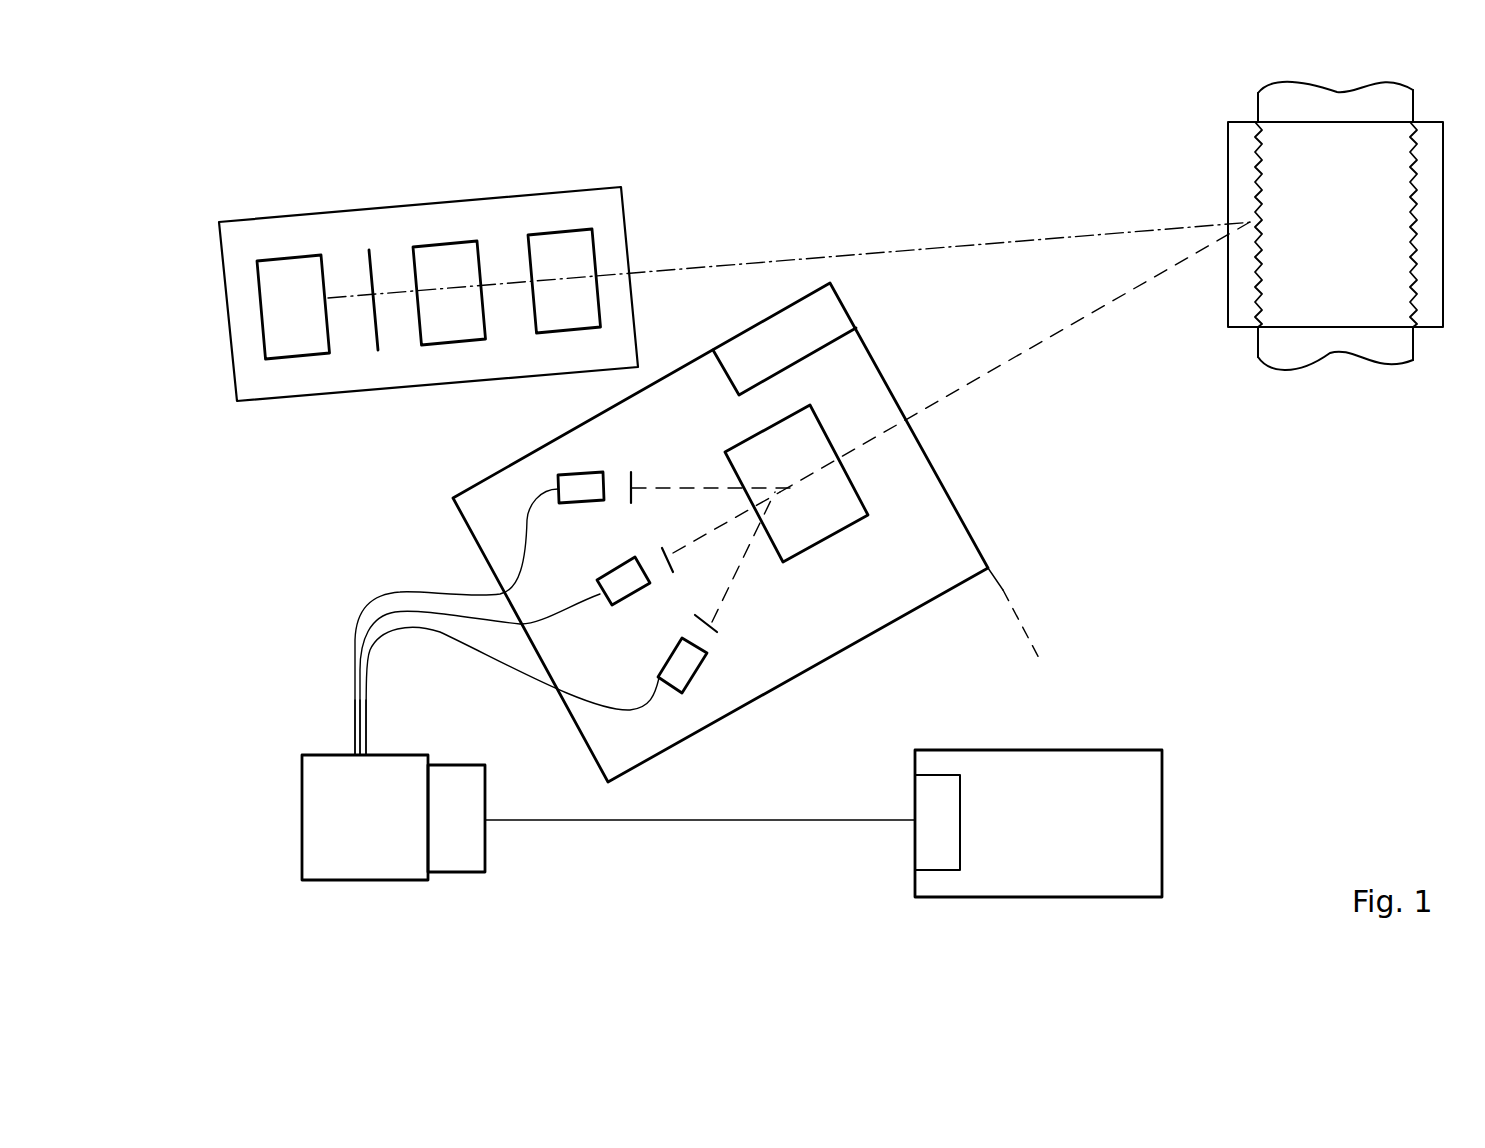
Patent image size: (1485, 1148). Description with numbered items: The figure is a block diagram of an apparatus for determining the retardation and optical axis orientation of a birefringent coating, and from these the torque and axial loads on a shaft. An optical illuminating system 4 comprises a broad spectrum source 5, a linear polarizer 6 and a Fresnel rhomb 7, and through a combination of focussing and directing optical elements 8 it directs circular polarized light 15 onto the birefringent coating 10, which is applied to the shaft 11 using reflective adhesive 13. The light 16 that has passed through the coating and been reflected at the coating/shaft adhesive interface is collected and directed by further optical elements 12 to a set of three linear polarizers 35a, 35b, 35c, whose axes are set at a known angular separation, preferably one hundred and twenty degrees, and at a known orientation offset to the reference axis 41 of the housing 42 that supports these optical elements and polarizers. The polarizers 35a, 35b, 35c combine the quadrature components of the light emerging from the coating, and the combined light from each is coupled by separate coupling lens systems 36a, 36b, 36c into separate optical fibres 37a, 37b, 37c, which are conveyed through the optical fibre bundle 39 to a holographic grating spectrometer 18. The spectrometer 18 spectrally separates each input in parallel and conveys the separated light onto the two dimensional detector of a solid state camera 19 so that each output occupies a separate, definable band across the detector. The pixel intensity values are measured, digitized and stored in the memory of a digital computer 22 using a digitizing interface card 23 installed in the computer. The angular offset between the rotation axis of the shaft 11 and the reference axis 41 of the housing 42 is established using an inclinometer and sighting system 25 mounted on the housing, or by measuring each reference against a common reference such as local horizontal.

The optical illuminating system 4 is at (280, 400).
The broad spectrum source 5 is at (305, 260).
The linear polarizer 6 is at (367, 265).
The Fresnel rhomb 7 is at (465, 253).
The focussing and directing optical elements 8 is at (572, 245).
The birefringent coating 10 is at (1228, 147).
The shaft 11 is at (1258, 95).
The further optical elements 12 is at (845, 505).
The reflective adhesive 13 is at (1258, 217).
The circular polarized light 15 is at (1058, 240).
The light 16 is at (1093, 318).
The holographic grating spectrometer 18 is at (322, 770).
The solid state camera 19 is at (472, 830).
The digital computer 22 is at (1097, 765).
The digitizing interface card 23 is at (927, 788).
The inclinometer and sighting system 25 is at (821, 316).
The linear polarizer 35a is at (630, 472).
The linear polarizer 35b is at (662, 548).
The linear polarizer 35c is at (720, 625).
The coupling lens system 36a is at (550, 477).
The coupling lens system 36b is at (627, 590).
The coupling lens system 36c is at (695, 670).
The optical fibre 37a is at (525, 537).
The optical fibre 37b is at (557, 607).
The optical fibre 37c is at (647, 707).
The optical fibre bundle 39 is at (353, 693).
The reference axis 41 is at (1017, 573).
The housing 42 is at (960, 512).